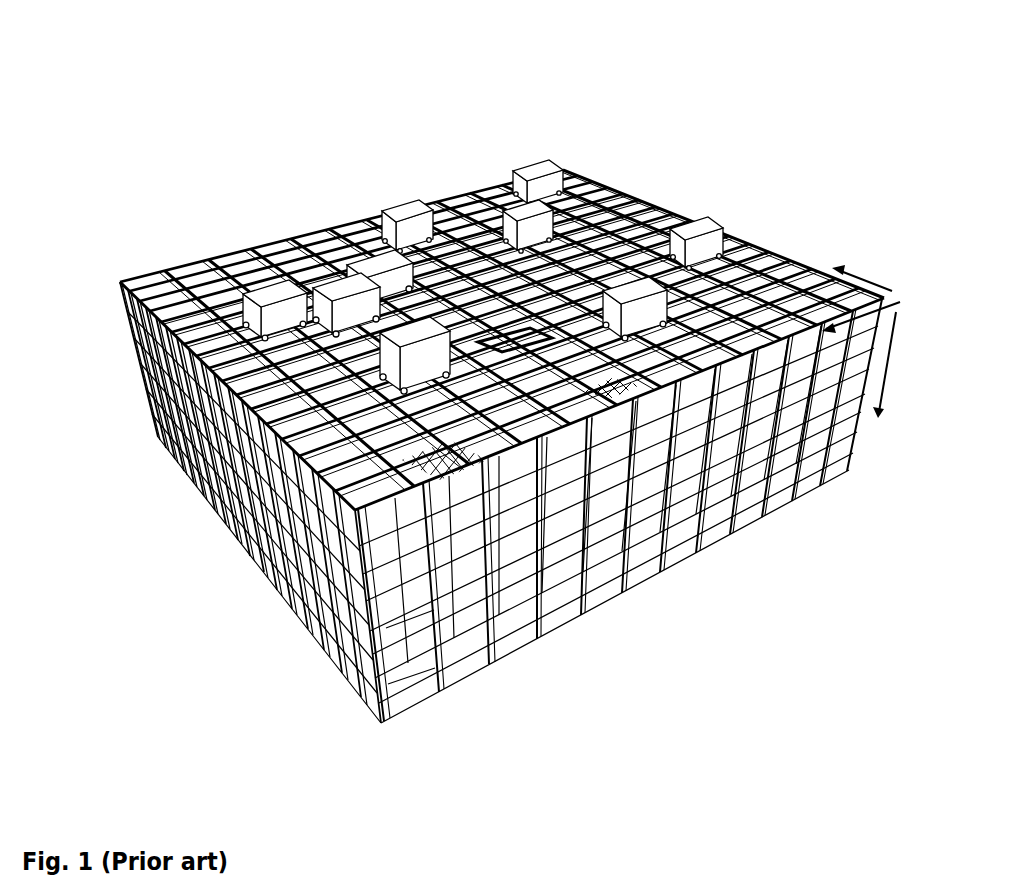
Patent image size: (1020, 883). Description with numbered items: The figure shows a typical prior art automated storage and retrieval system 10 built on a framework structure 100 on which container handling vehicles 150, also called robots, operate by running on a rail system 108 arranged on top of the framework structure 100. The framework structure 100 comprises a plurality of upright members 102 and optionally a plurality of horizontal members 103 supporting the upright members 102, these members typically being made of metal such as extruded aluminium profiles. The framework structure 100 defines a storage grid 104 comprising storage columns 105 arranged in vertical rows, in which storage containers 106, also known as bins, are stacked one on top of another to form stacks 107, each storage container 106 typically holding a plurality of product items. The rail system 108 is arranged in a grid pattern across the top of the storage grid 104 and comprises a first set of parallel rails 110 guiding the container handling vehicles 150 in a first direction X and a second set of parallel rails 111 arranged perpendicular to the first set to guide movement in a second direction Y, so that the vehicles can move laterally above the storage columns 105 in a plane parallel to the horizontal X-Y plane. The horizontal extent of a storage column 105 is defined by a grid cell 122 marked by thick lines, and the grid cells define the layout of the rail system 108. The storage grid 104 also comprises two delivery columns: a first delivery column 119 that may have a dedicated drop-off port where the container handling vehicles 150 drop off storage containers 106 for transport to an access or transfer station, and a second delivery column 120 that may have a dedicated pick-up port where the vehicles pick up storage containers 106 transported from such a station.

The automated storage and retrieval system 10 is at (337, 94).
The framework structure 100 is at (132, 423).
The upright members 102 is at (366, 615).
The horizontal members 103 is at (690, 473).
The storage grid 104 is at (124, 305).
The storage columns 105 is at (286, 525).
The storage containers 106 is at (413, 643).
The stacks 107 is at (763, 507).
The rail system 108 is at (812, 290).
The first set of parallel rails 110 is at (762, 295).
The second set of parallel rails 111 is at (358, 230).
The first delivery column 119 is at (443, 473).
The second delivery column 120 is at (604, 398).
The grid cell 122 is at (503, 338).
The container handling vehicles 150 is at (553, 170).